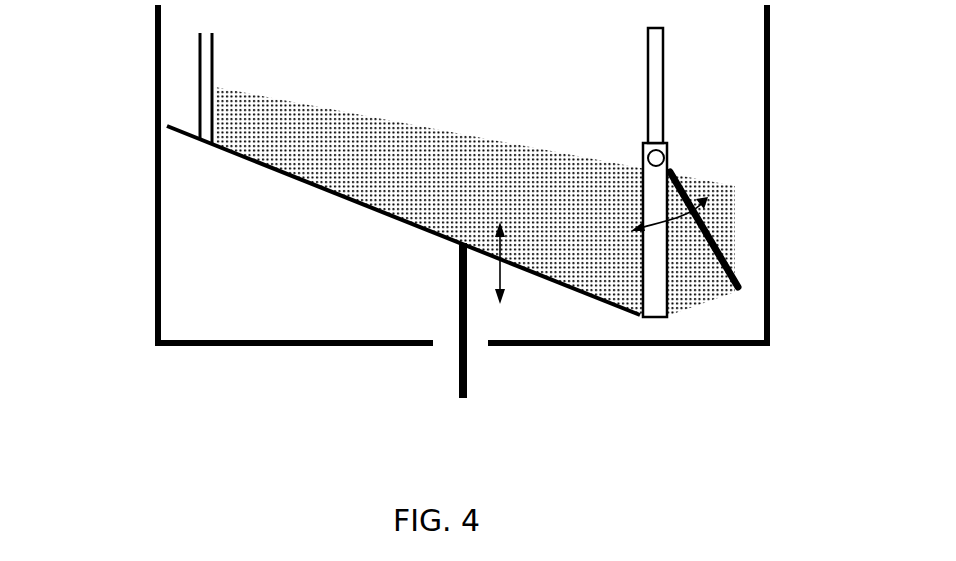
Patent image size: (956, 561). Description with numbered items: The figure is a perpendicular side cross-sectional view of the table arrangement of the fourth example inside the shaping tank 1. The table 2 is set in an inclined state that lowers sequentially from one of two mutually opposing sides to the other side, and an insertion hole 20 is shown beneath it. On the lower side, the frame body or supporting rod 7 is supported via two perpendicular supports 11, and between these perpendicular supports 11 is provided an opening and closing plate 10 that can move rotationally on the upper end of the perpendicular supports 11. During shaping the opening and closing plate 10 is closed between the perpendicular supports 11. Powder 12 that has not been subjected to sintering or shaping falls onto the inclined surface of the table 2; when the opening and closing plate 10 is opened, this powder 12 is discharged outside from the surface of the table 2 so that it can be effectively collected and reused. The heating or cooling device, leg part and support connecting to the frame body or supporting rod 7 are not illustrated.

The shaping tank 1 is at (155, 237).
The table 2 is at (445, 212).
The frame body or supporting rod 7 is at (205, 65).
The opening and closing plate 10 is at (691, 232).
The perpendicular support 11 is at (647, 229).
The powder 12 is at (423, 152).
The insertion hole 20 is at (447, 342).